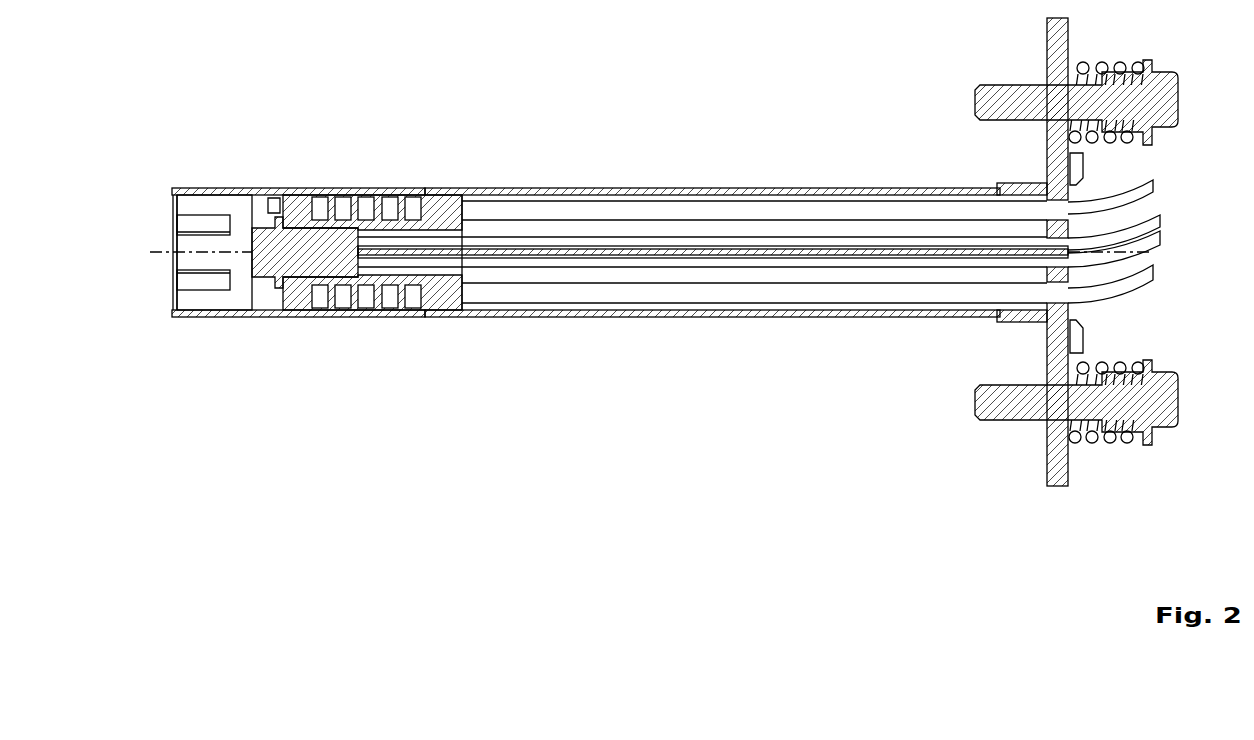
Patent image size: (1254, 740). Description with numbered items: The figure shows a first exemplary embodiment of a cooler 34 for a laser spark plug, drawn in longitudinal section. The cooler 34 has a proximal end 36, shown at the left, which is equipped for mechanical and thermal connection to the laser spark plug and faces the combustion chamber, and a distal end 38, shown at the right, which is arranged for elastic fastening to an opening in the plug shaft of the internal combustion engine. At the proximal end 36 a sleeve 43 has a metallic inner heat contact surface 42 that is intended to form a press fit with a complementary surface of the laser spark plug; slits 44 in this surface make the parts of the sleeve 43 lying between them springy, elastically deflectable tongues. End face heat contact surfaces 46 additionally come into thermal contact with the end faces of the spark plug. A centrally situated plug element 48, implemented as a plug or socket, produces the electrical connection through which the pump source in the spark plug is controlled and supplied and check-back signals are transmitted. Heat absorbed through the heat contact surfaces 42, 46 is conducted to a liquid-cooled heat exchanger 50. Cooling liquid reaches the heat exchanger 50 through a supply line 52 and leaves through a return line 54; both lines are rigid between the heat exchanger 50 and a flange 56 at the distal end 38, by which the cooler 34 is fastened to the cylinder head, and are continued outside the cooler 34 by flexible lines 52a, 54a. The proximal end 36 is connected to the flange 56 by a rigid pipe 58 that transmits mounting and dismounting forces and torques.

The cooler 34 is at (547, 352).
The proximal end 36 is at (175, 160).
The distal end 38 is at (1060, 500).
The heat contact surface 42 is at (190, 309).
The sleeve 43 is at (172, 245).
The slits 44 is at (207, 217).
The end face heat contact surfaces 46 is at (276, 204).
The plug element 48 is at (262, 272).
The heat exchanger 50 is at (385, 205).
The supply line 52 is at (690, 205).
The flexible line 52a is at (1148, 190).
The return line 54 is at (687, 296).
The flexible line 54a is at (1147, 273).
The flange 56 is at (1023, 314).
The rigid pipe 58 is at (620, 188).